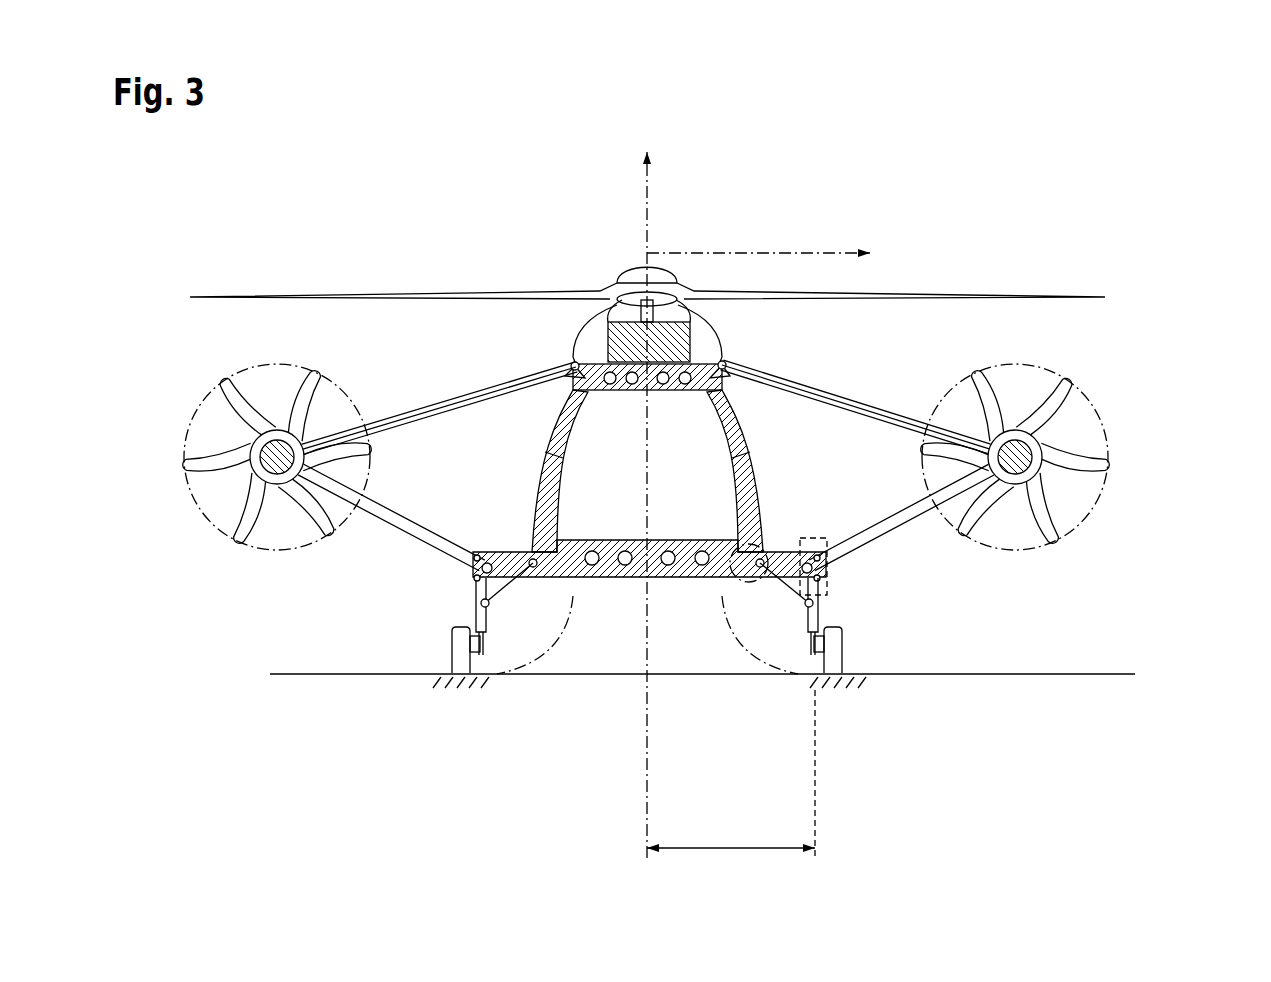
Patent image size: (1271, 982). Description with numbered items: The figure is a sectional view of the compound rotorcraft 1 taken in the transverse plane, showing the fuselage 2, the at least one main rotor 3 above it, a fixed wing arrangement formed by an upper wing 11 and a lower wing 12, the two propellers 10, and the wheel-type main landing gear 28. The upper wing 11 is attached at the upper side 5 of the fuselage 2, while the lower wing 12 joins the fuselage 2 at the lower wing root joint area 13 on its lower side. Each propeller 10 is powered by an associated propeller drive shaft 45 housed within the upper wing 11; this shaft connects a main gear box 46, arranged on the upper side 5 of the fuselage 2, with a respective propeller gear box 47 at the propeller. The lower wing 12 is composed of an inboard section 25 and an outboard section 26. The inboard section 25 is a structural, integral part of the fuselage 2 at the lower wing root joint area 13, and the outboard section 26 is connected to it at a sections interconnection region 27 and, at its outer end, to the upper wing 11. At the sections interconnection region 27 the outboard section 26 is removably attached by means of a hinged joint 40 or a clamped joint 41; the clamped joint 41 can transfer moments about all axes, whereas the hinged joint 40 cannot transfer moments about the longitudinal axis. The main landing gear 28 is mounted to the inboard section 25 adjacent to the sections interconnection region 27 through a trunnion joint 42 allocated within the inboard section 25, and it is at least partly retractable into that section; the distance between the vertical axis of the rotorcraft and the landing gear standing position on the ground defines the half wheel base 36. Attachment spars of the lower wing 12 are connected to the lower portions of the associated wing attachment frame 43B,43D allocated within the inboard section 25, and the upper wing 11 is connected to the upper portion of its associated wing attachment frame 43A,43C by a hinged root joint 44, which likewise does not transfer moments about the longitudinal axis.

The compound rotorcraft 1 is at (581, 342).
The fuselage 2 is at (530, 450).
The main rotor 3 is at (1022, 292).
The upper side 5 is at (750, 395).
The propellers 10 is at (1060, 442).
The upper wing 11 is at (870, 392).
The lower wing 12 is at (917, 536).
The lower wing root joint area 13 is at (736, 585).
The inboard section 25 is at (792, 540).
The outboard section 26 is at (880, 520).
The sections interconnection region 27 is at (840, 588).
The wheel-type main landing gear 28 is at (805, 622).
The half wheel base 36 is at (735, 847).
The hinged joint 40 is at (840, 565).
The clamped joint 41 is at (458, 567).
The trunnion joint 42 is at (484, 548).
The upper portion of wing attachment frame 43A,43C is at (550, 395).
The lower portions of wing attachment frame 43B,43D is at (522, 527).
The hinged root joint 44 is at (726, 348).
The propeller drive shaft 45 is at (905, 405).
The main gear box 46 is at (672, 310).
The propeller gear box 47 is at (1045, 457).